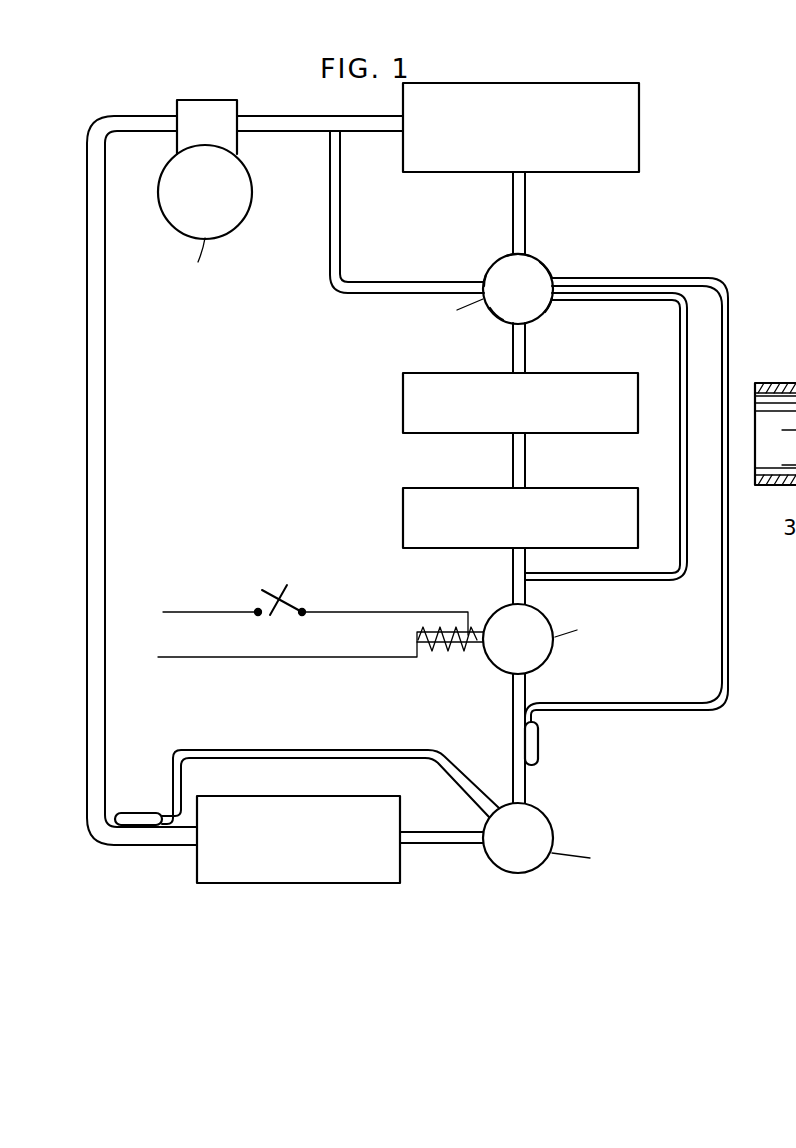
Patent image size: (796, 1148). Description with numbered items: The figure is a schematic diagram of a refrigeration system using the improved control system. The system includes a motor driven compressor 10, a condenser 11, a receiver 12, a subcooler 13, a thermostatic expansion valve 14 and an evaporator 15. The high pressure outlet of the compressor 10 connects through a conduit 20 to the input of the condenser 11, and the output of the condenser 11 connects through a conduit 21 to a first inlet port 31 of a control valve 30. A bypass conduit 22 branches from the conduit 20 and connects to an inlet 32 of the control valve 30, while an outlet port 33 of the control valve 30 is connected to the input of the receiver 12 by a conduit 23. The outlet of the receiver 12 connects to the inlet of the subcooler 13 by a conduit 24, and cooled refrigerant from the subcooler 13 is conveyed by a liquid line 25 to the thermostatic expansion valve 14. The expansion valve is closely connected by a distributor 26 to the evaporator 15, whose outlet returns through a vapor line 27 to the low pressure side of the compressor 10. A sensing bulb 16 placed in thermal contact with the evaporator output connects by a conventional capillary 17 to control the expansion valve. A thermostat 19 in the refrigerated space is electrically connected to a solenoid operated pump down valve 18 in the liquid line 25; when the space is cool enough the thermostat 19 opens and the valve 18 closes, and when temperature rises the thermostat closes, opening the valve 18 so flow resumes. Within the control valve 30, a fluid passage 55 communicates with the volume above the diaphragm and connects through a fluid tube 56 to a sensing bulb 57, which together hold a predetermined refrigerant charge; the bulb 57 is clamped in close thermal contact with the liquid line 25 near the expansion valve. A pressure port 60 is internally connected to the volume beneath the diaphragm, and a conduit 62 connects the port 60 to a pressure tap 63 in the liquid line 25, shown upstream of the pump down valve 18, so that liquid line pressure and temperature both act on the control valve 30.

The motor driven compressor 10 is at (207, 111).
The condenser 11 is at (628, 128).
The receiver 12 is at (420, 403).
The subcooler 13 is at (418, 513).
The thermostatic expansion valve 14 is at (523, 864).
The evaporator 15 is at (290, 870).
The sensing bulb 16 is at (136, 812).
The capillary 17 is at (307, 748).
The solenoid operated pump down valve 18 is at (493, 665).
The thermostat 19 is at (290, 603).
The conduit 20 is at (303, 123).
The conduit 21 is at (523, 193).
The bypass conduit 22 is at (336, 290).
The conduit 23 is at (526, 353).
The conduit 24 is at (513, 456).
The liquid line 25 is at (512, 566).
The distributor 26 is at (443, 845).
The vapor line 27 is at (106, 466).
The control valve 30 is at (557, 253).
The first inlet port 31 is at (512, 254).
The inlet 32 is at (483, 281).
The outlet port 33 is at (504, 324).
The fluid passage 55 is at (558, 279).
The fluid tube 56 is at (728, 611).
The sensing bulb 57 is at (540, 743).
The pressure port 60 is at (553, 297).
The conduit 62 is at (680, 455).
The pressure tap 63 is at (528, 582).